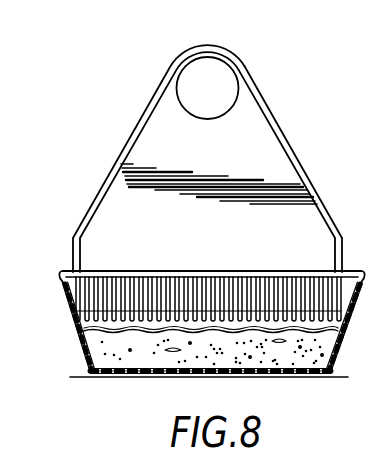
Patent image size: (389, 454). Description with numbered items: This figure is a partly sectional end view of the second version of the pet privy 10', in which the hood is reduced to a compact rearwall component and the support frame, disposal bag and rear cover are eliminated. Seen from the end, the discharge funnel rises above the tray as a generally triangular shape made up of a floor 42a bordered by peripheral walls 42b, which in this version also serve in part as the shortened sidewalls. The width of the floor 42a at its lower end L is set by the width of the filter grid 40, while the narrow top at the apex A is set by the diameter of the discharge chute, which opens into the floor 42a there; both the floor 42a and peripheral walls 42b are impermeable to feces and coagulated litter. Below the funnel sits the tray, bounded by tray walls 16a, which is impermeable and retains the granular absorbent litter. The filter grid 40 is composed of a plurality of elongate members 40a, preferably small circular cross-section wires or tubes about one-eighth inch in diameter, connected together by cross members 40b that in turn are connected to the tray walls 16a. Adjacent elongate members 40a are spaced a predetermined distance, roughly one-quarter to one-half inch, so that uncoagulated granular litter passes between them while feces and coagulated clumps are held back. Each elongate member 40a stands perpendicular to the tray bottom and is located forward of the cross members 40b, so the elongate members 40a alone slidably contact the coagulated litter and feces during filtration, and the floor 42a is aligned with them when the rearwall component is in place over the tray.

The pet privy (second version) 10' is at (195, 202).
The floor 42a is at (115, 146).
The peripheral walls 42b is at (270, 142).
The apex A is at (205, 58).
The filter grid 40 is at (208, 266).
The elongate members 40a is at (124, 270).
The cross members 40b is at (186, 270).
The lower end L is at (274, 270).
The tray walls 16a is at (195, 306).